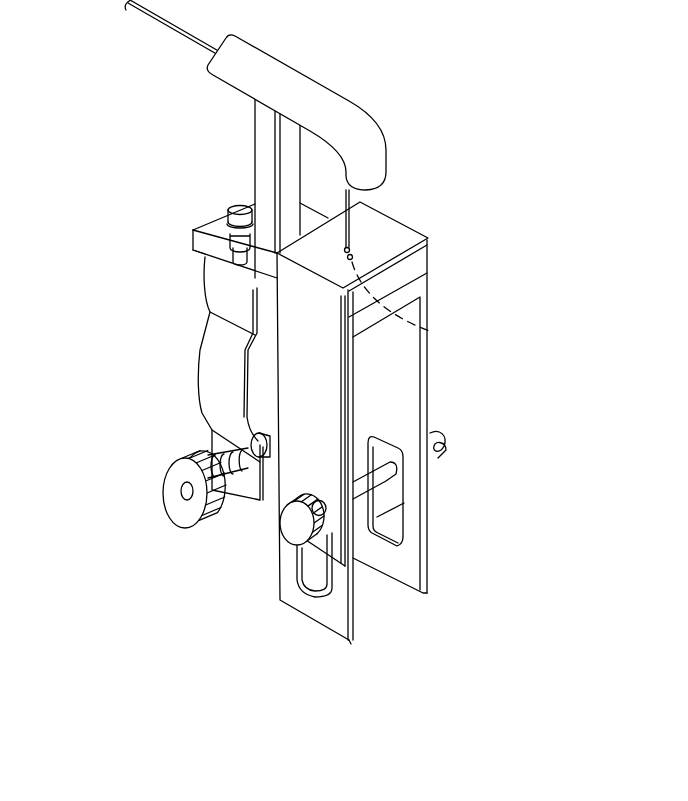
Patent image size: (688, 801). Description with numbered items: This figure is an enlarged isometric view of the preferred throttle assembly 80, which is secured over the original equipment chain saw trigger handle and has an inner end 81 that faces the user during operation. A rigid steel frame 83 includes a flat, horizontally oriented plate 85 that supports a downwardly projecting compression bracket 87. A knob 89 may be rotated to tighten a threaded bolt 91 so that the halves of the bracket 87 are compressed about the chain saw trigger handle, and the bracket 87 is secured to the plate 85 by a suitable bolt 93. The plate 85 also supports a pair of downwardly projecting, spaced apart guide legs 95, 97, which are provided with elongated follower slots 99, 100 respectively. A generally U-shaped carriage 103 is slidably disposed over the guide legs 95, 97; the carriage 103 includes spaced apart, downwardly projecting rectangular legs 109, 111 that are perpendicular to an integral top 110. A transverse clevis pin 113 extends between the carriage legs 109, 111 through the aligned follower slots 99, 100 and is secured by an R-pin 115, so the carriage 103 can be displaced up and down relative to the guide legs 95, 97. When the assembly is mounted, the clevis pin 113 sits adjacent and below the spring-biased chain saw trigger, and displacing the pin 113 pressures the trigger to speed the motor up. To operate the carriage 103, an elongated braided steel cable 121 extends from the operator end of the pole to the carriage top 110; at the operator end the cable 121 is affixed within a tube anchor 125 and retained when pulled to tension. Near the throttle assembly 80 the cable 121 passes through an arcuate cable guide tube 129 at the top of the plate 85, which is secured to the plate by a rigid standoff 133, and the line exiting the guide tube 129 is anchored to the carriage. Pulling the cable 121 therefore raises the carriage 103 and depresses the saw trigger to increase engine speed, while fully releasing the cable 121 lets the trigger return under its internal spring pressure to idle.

The throttle assembly 80 is at (504, 231).
The inner end 81 is at (201, 145).
The rigid steel frame 83 is at (185, 230).
The plate 85 is at (203, 250).
The compression bracket 87 is at (193, 357).
The knob 89 is at (186, 496).
The threaded bolt 91 is at (226, 444).
The bolt 93 is at (234, 202).
The guide leg 95 is at (350, 641).
The guide leg 97 is at (403, 580).
The follower slot 99 is at (313, 580).
The follower slot 100 is at (391, 529).
The carriage 103 is at (437, 263).
The carriage leg 109 is at (323, 360).
The carriage top 110 is at (386, 233).
The carriage leg 111 is at (395, 490).
The clevis pin 113 is at (296, 522).
The R-pin 115 is at (440, 460).
The cable 121 is at (172, 28).
The tube anchor 125 is at (441, 332).
The cable guide tube 129 is at (328, 92).
The standoff 133 is at (255, 124).